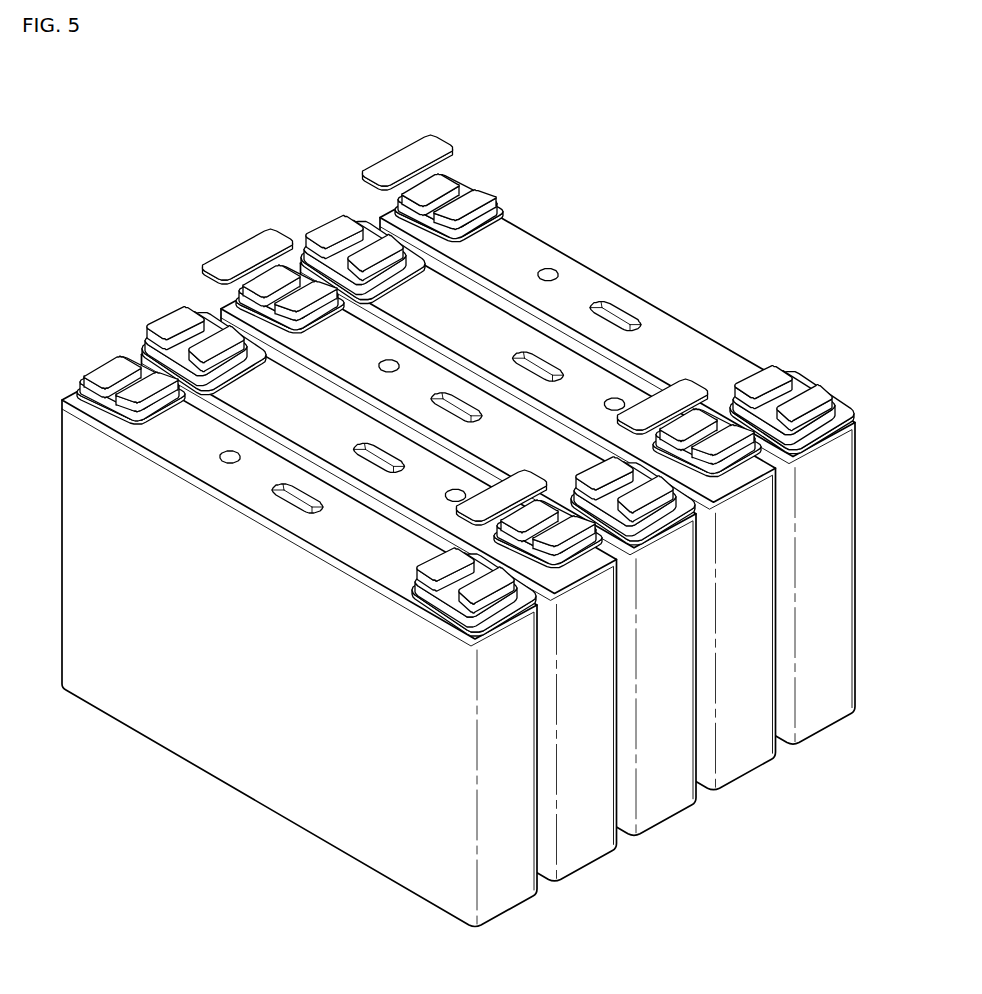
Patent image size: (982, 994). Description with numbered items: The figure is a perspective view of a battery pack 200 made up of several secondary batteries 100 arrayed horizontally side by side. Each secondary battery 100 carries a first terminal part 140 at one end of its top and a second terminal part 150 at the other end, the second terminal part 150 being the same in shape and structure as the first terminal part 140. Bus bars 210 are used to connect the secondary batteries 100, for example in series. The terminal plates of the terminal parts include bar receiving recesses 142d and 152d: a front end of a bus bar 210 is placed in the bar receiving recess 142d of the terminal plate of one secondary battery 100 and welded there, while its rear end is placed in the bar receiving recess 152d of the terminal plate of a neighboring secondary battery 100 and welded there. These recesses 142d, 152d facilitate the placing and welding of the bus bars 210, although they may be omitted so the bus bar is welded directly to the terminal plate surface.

The secondary battery 100 is at (455, 543).
The first terminal part 140 is at (160, 327).
The bar receiving recess 142d is at (217, 330).
The second terminal part 150 is at (252, 246).
The bar receiving recess 152d is at (275, 298).
The battery pack 200 is at (455, 531).
The bus bar 210 is at (255, 240).